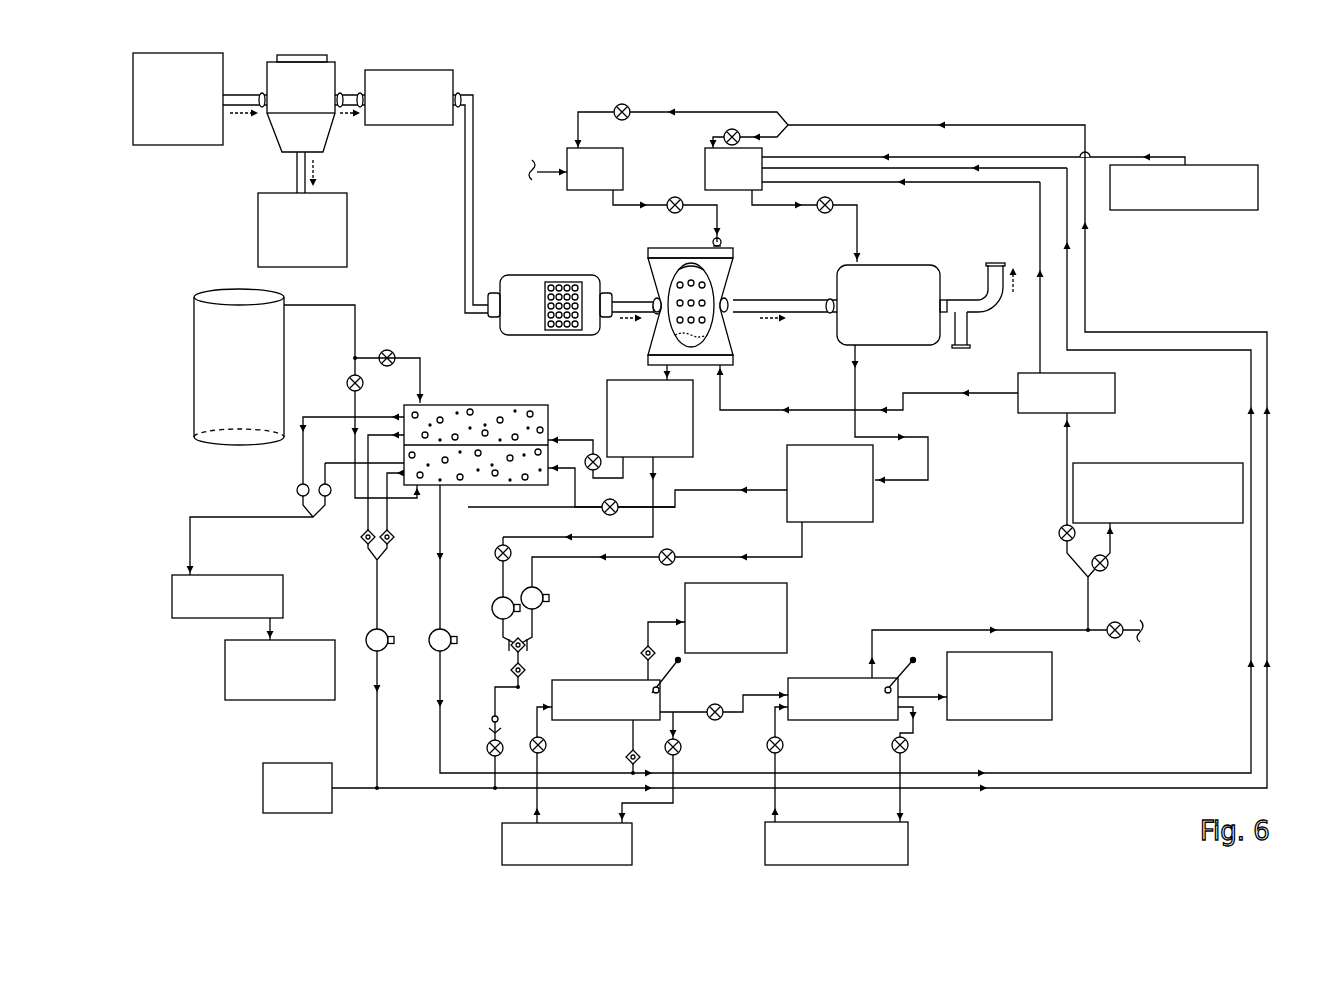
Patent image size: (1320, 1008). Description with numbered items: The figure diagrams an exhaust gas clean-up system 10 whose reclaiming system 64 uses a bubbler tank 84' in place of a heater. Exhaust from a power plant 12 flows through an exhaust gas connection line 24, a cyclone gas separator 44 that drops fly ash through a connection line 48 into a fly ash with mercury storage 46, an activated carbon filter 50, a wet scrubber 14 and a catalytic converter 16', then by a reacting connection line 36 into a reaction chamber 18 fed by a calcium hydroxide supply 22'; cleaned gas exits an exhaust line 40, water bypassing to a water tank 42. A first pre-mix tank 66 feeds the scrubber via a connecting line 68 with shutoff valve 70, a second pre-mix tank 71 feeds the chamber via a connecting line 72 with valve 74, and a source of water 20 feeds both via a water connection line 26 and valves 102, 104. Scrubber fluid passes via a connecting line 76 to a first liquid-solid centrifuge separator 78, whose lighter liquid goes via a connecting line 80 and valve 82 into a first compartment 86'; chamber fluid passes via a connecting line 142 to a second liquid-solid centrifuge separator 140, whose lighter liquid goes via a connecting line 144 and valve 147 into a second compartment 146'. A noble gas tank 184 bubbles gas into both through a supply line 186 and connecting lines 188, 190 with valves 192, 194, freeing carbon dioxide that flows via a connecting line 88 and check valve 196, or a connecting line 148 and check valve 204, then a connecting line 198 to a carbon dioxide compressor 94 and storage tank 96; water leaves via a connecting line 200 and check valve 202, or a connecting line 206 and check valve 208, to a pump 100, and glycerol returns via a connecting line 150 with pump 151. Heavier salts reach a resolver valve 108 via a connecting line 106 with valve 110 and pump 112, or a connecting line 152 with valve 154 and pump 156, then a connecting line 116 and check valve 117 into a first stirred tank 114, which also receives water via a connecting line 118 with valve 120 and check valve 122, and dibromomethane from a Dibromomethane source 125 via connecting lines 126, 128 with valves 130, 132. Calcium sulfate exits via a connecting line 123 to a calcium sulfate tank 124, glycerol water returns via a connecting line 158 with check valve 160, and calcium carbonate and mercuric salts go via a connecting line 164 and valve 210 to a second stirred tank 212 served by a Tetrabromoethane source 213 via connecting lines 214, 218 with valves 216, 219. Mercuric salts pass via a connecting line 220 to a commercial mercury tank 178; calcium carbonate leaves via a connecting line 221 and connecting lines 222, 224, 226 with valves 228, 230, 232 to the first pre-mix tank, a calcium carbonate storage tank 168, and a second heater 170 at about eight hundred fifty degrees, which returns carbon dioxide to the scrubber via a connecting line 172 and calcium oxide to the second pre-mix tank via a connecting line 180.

The exhaust gas clean-up system 10 is at (546, 80).
The fossil fuel fired power plant 12 is at (195, 145).
The wet scrubber 14 is at (656, 248).
The filter unit 16' is at (550, 280).
The reaction chamber 18 is at (900, 265).
The source of water 20 is at (302, 763).
The calcium hydroxide supply 22' is at (1010, 195).
The exhaust gas connection line 24 is at (264, 93).
The water connection line 26 is at (836, 125).
The reacting connection line 36 is at (795, 300).
The exhaust line 40 is at (985, 275).
The water tank 42 is at (968, 330).
The cyclone gas separator 44 is at (325, 150).
The fly ash with mercury storage 46 is at (258, 226).
The connection line 48 is at (297, 177).
The activated carbon filter 50 is at (400, 125).
The reclaiming system 64 is at (546, 120).
The first pre-mix tank 66 is at (618, 148).
The connecting line 68 is at (612, 201).
The remotely controlled shutoff valve 70 is at (672, 197).
The second pre-mix tank 71 is at (705, 157).
The connecting line 72 is at (762, 206).
The remotely controlled shutoff valve 74 is at (818, 212).
The connecting line 76 is at (662, 373).
The first liquid-solid centrifuge separator 78 is at (607, 410).
The connecting line 80 is at (653, 485).
The remotely controlled shutoff valve 82 is at (590, 455).
The bubbler tank 84' is at (476, 426).
The first compartment 86' is at (452, 388).
The connecting line 88 is at (308, 435).
The carbon dioxide compressor 94 is at (233, 575).
The commercial carbon dioxide storage tank 96 is at (225, 668).
The remotely controlled pump 100 is at (366, 630).
The remotely controlled shutoff valve 102 is at (615, 107).
The remotely controlled shutoff valve 104 is at (738, 128).
The connecting line 106 is at (658, 527).
The resolver valve 108 is at (530, 647).
The remotely controlled shutoff valve 110 is at (495, 556).
The remotely controlled pump 112 is at (491, 609).
The first stirred tank 114 is at (610, 722).
The connecting line 116 is at (528, 671).
The one-way check valve 117 is at (510, 661).
The connecting line 118 is at (540, 673).
The remotely controlled shutoff valve 120 is at (487, 750).
The one-way check valve 122 is at (488, 728).
The connecting line 123 is at (647, 643).
The commercial calcium sulfate tank 124 is at (685, 602).
The Dibromomethane source 125 is at (632, 845).
The connecting line 126 is at (530, 808).
The return connecting line 128 is at (673, 803).
The remotely controlled shutoff valve 130 is at (547, 750).
The remotely controlled shutoff valve 132 is at (682, 747).
The second liquid-solid centrifuge separator 140 is at (787, 456).
The connecting line 142 is at (855, 388).
The connecting line 144 is at (718, 490).
The second compartment 146' is at (507, 495).
The remotely controlled shutoff valve 147 is at (615, 513).
The connecting line 148 is at (345, 463).
The connecting line 150 is at (442, 540).
The remotely controlled pump 151 is at (428, 649).
The connecting line 152 is at (700, 558).
The remotely controlled shutoff valve 154 is at (659, 563).
The remotely controlled pump 156 is at (546, 602).
The connecting line 158 is at (640, 727).
The one-way check valve 160 is at (641, 758).
The connecting line 164 is at (720, 704).
The calcium carbonate storage tank 168 is at (1180, 463).
The second heater 170 is at (1118, 395).
The connecting line 172 is at (795, 410).
The commercial mercury tank 178 is at (1052, 688).
The connecting line 180 is at (1040, 225).
The noble gas tank 184 is at (194, 380).
The supply line 186 is at (355, 325).
The connecting line 188 is at (420, 355).
The connecting line 190 is at (355, 400).
The remote controlled shutoff valve 192 is at (386, 350).
The remote controlled shutoff valve 194 is at (365, 383).
The one-way check valve 196 is at (297, 482).
The connecting line 198 is at (190, 532).
The connecting line 200 is at (362, 531).
The one-way check valve 202 is at (362, 540).
The one-way check valve 204 is at (330, 484).
The connecting line 206 is at (390, 528).
The one-way check valve 208 is at (393, 543).
The remotely controlled shutoff valve 210 is at (744, 714).
The second stirred tank 212 is at (833, 678).
The source of Tetrabromoethane 213 is at (830, 822).
The connecting line 214 is at (780, 718).
The remotely controlled shutoff valve 216 is at (783, 749).
The connecting line 218 is at (912, 730).
The remotely controlled shutoff valve 219 is at (895, 749).
The connecting line 220 is at (908, 682).
The connecting line 221 is at (903, 630).
The connecting line 222 is at (530, 170).
The connecting line 224 is at (1112, 540).
The connecting line 226 is at (1068, 428).
The remotely controlled shutoff valve 228 is at (1118, 639).
The remotely controlled shutoff valve 230 is at (1108, 566).
The remotely controlled shutoff valve 232 is at (1060, 530).